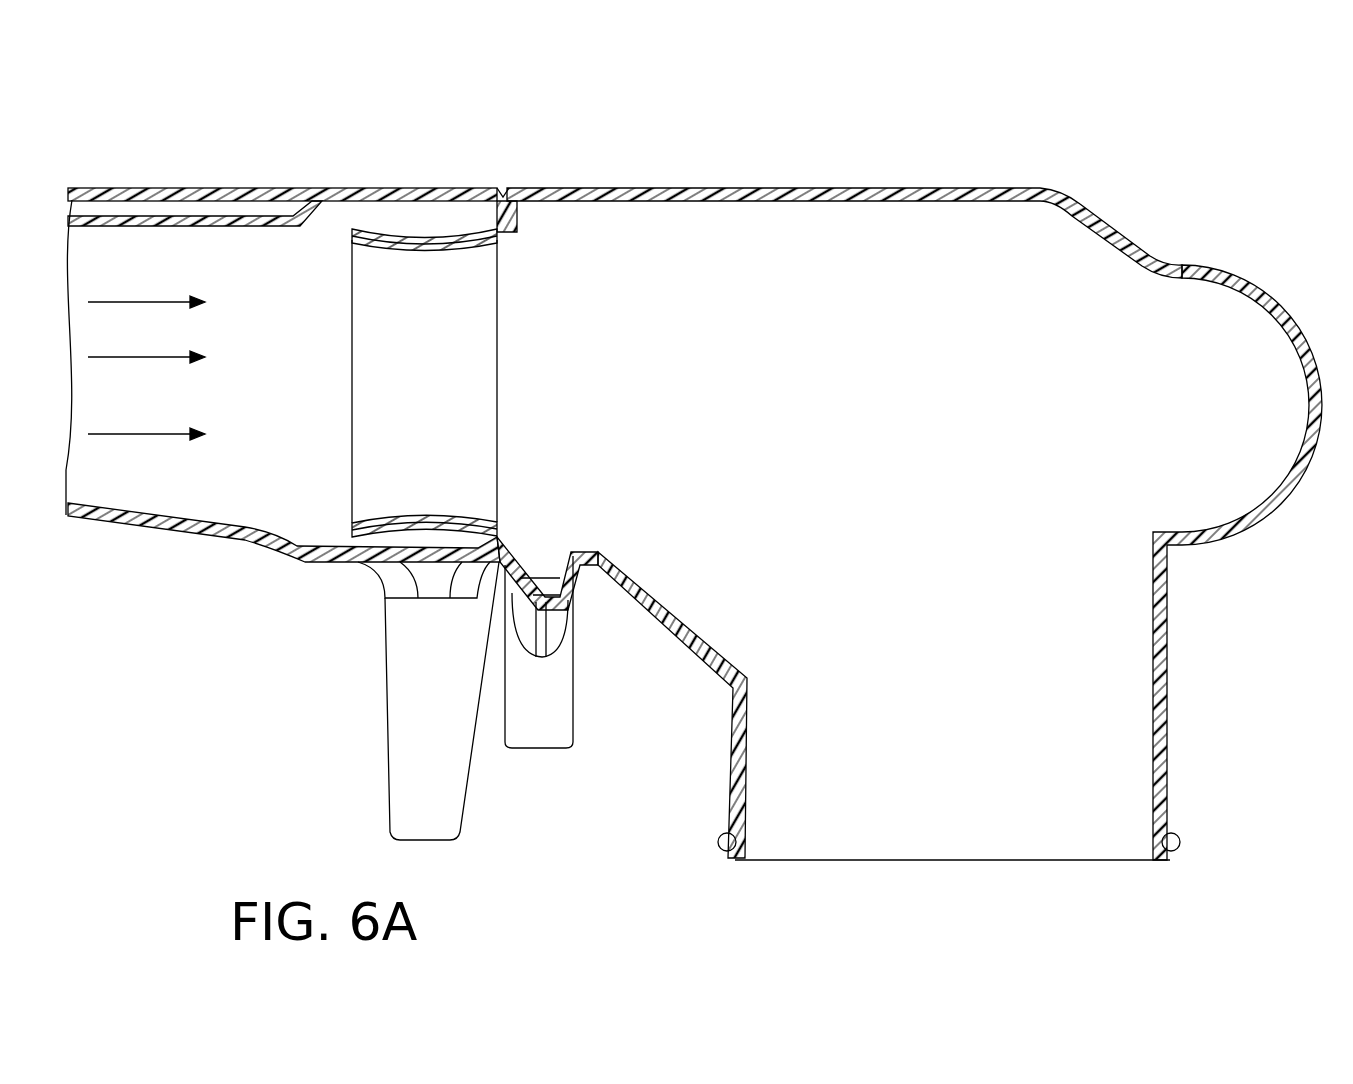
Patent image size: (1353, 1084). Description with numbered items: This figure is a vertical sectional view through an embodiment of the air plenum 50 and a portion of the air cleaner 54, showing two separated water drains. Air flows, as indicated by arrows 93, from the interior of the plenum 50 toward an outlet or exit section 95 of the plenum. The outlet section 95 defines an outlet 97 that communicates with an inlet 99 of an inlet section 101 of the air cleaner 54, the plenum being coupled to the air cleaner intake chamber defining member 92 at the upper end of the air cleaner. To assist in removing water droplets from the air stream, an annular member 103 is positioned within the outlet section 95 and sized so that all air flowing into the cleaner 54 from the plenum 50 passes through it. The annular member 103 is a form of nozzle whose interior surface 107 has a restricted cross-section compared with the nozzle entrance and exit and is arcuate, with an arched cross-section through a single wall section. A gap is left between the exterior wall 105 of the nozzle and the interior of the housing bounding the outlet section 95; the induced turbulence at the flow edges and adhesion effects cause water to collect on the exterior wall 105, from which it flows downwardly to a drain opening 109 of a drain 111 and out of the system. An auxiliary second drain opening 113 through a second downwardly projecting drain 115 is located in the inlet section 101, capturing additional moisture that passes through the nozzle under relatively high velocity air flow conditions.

The plenum 50 is at (166, 182).
The air cleaner 54 is at (1128, 772).
The air cleaner intake chamber defining member 92 is at (1130, 234).
The arrows 93 is at (147, 434).
The outlet section 95 is at (408, 222).
The outlet 97 is at (505, 372).
The inlet 99 is at (517, 268).
The inlet section 101 is at (600, 256).
The annular member 103 is at (376, 260).
The exterior wall 105 is at (385, 222).
The interior surface 107 is at (413, 252).
The drain opening 109 is at (418, 580).
The drain 111 is at (395, 727).
The second drain opening 113 is at (548, 612).
The second drain 115 is at (540, 705).